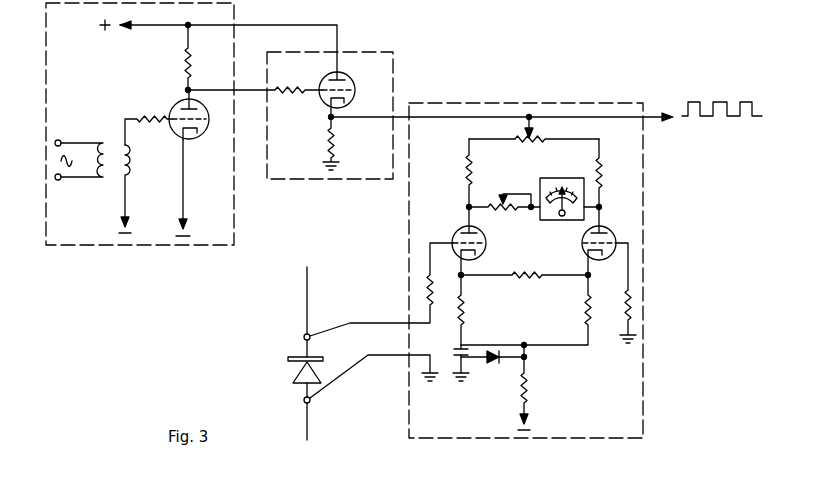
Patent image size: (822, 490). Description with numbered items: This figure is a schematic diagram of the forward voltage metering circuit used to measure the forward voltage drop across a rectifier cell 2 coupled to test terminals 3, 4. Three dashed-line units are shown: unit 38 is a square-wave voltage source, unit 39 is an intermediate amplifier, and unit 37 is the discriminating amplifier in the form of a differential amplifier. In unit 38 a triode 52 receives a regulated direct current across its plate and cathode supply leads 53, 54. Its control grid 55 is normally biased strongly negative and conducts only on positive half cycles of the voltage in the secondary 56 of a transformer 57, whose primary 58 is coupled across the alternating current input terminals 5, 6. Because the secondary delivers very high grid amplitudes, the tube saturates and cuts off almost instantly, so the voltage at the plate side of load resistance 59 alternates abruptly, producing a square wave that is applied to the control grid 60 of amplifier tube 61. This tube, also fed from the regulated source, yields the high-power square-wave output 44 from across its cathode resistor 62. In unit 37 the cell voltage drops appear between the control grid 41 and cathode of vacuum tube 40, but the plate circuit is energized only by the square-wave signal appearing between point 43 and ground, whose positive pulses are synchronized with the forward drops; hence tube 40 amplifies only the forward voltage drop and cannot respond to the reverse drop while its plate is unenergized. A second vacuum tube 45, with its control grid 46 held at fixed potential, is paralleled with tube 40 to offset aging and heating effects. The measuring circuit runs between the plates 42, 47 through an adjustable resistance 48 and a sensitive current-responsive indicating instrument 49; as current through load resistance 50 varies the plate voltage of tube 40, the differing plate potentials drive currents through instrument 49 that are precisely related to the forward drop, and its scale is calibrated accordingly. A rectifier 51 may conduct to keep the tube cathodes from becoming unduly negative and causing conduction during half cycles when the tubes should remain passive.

The cell 2 is at (294, 375).
The test terminal 3 is at (304, 336).
The test terminal 4 is at (305, 402).
The alternating current input terminal 5 is at (59, 140).
The alternating current input terminal 6 is at (58, 180).
The discriminating amplifier unit 37 is at (643, 177).
The square-wave voltage source unit 38 is at (234, 221).
The intermediate amplifier unit 39 is at (397, 75).
The vacuum tube 40 is at (489, 247).
The control grid 41 is at (459, 238).
The plate 42 is at (480, 239).
The point 43 is at (531, 116).
The square-wave output 44 is at (701, 102).
The vacuum tube 45 is at (614, 235).
The control grid 46 is at (587, 247).
The plate 47 is at (602, 232).
The adjustable resistance 48 is at (534, 193).
The current-responsive indicating instrument 49 is at (557, 178).
The load resistance 50 is at (466, 172).
The rectifier 51 is at (493, 362).
The triode 52 is at (196, 134).
The plate supply lead 53 is at (151, 27).
The cathode supply lead 54 is at (188, 194).
The control grid 55 is at (173, 109).
The secondary 56 is at (133, 159).
The transformer 57 is at (102, 110).
The primary 58 is at (99, 169).
The load resistance 59 is at (194, 57).
The control grid 60 is at (323, 98).
The amplifier tube 61 is at (321, 79).
The cathode resistor 62 is at (342, 141).